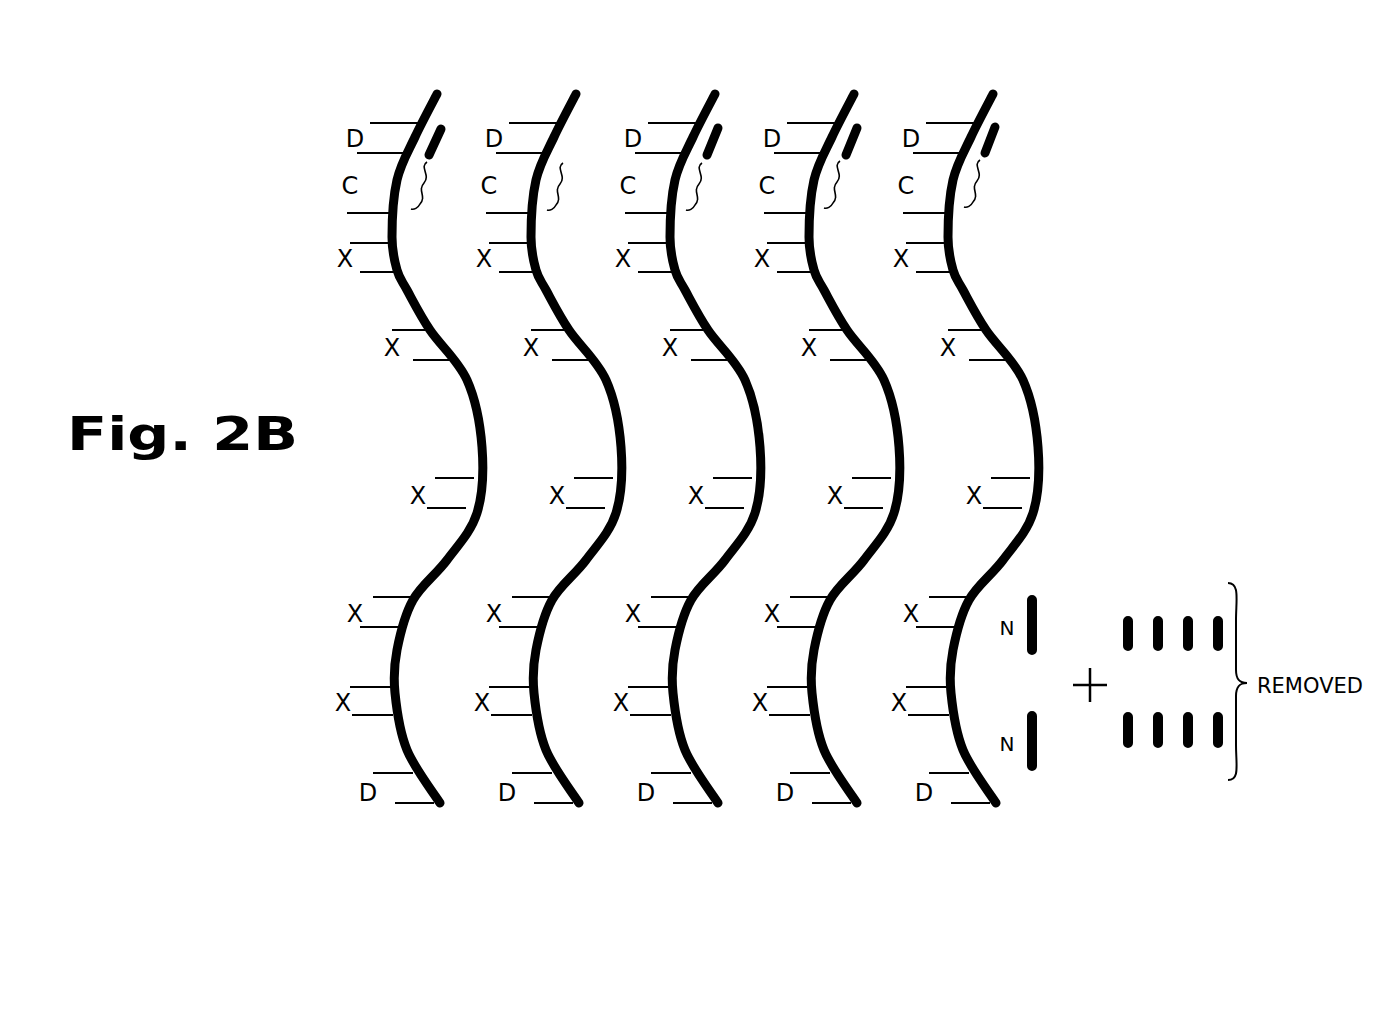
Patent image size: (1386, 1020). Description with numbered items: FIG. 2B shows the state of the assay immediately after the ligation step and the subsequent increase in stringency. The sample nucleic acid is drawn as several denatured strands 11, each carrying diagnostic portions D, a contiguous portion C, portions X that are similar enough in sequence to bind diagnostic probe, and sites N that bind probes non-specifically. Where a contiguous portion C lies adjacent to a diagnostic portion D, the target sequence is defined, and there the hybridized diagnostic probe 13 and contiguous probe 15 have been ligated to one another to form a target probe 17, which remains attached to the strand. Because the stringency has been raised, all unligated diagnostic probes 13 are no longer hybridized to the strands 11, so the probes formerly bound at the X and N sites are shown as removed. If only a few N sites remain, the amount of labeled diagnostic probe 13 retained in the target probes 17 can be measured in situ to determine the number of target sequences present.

The denatured strands 11 is at (688, 439).
The diagnostic probe 13 is at (1214, 613).
The contiguous probe 15 is at (552, 210).
The target probes 17 is at (436, 150).